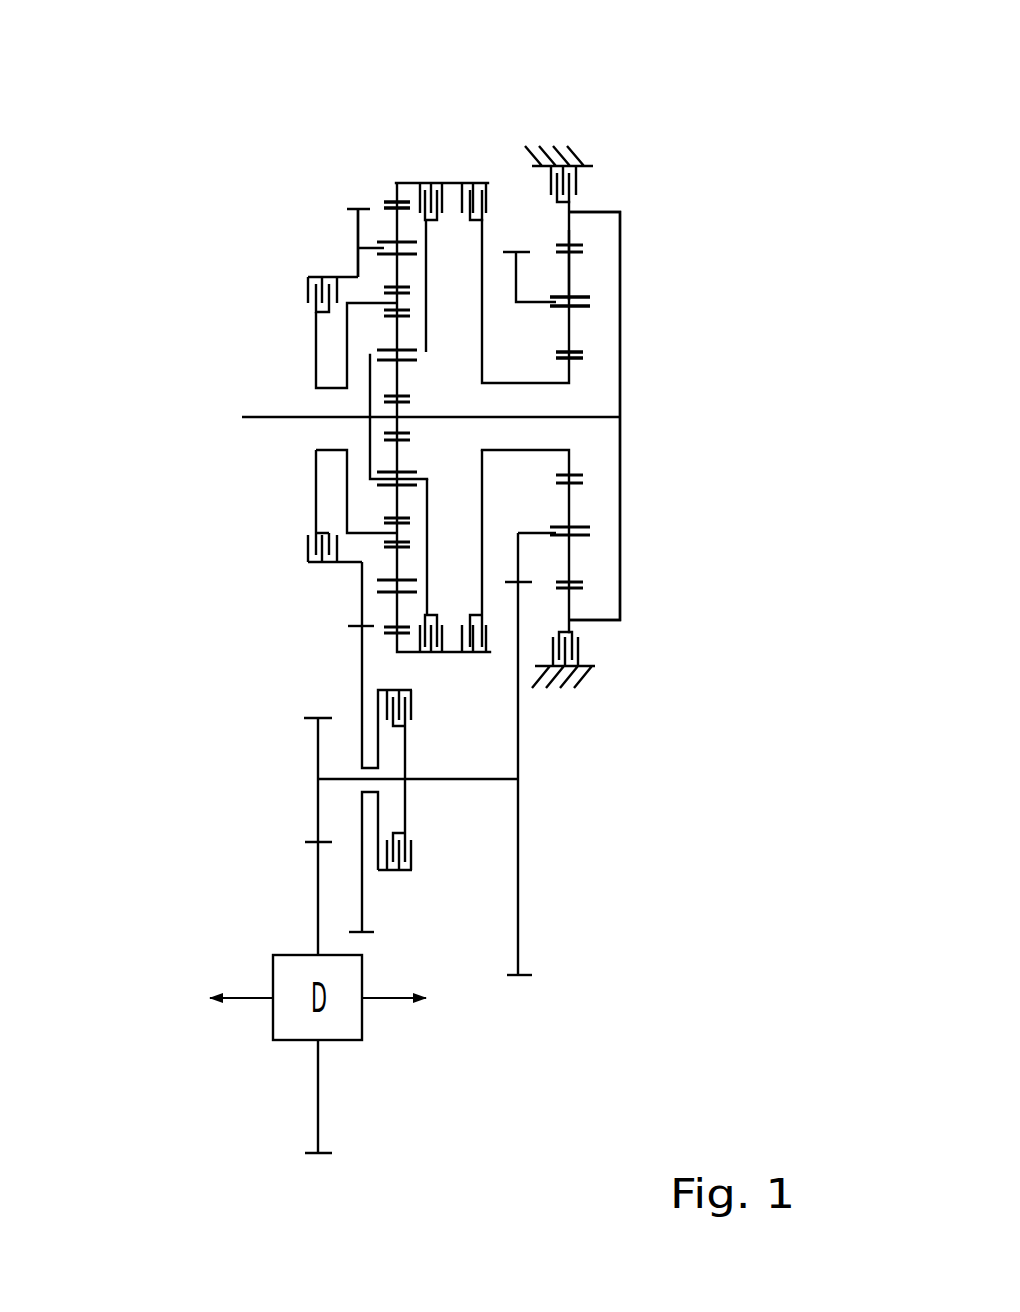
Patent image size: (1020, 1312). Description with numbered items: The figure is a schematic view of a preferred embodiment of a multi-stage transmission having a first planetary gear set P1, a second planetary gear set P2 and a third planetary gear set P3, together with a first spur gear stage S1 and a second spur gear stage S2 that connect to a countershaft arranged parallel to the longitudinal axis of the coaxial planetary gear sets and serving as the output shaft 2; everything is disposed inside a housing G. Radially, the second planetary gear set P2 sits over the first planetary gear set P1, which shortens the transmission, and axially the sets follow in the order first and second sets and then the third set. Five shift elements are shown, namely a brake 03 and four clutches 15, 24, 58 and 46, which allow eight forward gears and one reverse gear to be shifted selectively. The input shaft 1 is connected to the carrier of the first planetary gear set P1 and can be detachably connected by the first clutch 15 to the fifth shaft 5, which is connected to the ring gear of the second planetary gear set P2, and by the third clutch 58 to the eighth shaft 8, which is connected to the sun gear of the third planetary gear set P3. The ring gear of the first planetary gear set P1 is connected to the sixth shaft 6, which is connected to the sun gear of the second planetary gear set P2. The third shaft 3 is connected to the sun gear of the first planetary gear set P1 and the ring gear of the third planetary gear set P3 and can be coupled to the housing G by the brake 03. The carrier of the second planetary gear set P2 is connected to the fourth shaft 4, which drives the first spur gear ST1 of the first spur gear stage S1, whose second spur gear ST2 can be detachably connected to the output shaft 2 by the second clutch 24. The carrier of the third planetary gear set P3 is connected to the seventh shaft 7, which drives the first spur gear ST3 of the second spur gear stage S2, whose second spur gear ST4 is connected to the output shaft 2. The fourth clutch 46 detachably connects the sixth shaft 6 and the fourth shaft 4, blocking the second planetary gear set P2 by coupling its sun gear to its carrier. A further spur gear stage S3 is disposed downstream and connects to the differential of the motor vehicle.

The input shaft 1 is at (275, 417).
The output shaft 2 is at (478, 782).
The third shaft 3 is at (592, 420).
The fourth shaft 4 is at (347, 275).
The fifth shaft 5 is at (383, 204).
The sixth shaft 6 is at (312, 343).
The seventh shaft 7 is at (588, 298).
The eighth shaft 8 is at (571, 370).
The first clutch 15 is at (424, 183).
The second clutch 24 is at (410, 693).
The fourth clutch 46 is at (308, 276).
The third clutch 58 is at (467, 185).
The brake 03 is at (573, 180).
The housing G is at (572, 152).
The first planetary gear set P1 is at (383, 493).
The second planetary gear set P2 is at (383, 643).
The third planetary gear set P3 is at (585, 278).
The first spur gear stage S1 is at (350, 620).
The second spur gear stage S2 is at (530, 572).
The further spur gear stage S3 is at (305, 848).
The first spur gear ST1 is at (347, 208).
The second spur gear ST2 is at (362, 930).
The first spur gear ST3 is at (508, 251).
The second spur gear ST4 is at (532, 978).